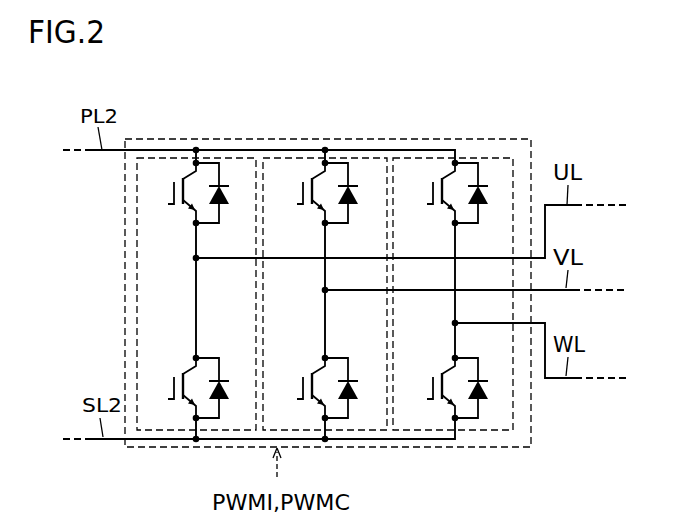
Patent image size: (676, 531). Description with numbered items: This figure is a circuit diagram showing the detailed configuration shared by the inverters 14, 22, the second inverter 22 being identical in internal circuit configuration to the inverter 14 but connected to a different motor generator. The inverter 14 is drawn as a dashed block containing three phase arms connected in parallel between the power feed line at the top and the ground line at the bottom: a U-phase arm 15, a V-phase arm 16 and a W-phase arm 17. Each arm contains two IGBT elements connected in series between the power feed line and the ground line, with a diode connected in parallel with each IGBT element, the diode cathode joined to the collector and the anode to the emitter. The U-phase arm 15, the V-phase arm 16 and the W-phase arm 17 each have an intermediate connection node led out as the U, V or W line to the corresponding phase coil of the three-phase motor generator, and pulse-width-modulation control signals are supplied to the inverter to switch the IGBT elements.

The inverter 14 is at (354, 261).
The inverter 22 is at (534, 128).
The U-phase arm 15 is at (231, 155).
The V-phase arm 16 is at (360, 156).
The W-phase arm 17 is at (488, 156).